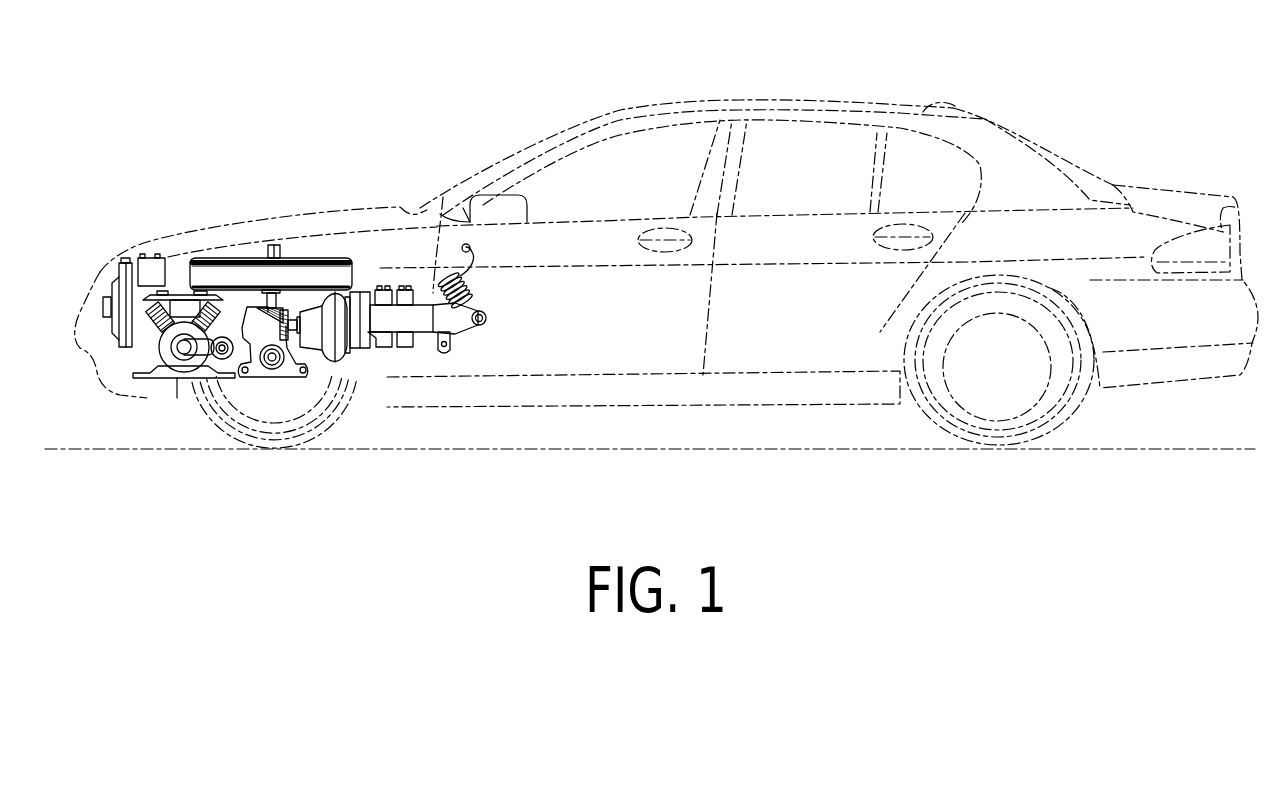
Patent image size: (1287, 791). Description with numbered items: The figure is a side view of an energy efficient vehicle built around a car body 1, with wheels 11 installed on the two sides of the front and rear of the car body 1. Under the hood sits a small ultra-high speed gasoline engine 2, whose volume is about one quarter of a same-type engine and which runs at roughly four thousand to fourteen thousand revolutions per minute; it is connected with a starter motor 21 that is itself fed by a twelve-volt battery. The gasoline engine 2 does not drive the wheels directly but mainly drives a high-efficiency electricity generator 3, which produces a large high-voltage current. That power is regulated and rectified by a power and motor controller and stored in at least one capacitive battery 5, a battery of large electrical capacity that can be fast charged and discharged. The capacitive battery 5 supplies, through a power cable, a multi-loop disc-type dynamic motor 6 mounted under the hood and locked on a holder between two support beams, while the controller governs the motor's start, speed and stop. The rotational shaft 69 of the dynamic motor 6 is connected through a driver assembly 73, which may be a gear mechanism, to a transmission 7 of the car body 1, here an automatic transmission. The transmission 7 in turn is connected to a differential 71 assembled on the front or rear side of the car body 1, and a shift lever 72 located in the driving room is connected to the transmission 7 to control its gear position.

The car body 1 is at (700, 393).
The wheels 11 is at (248, 425).
The gasoline engine 2 is at (160, 397).
The starter motor 21 is at (226, 352).
The electricity generator 3 is at (178, 300).
The capacitive battery 5 is at (403, 290).
The multi-loop disc-type dynamic motor 6 is at (307, 258).
The rotational shaft 69 is at (270, 245).
The transmission 7 is at (348, 357).
The differential 71 is at (283, 322).
The shift lever 72 is at (470, 244).
The driver assembly 73 is at (268, 314).